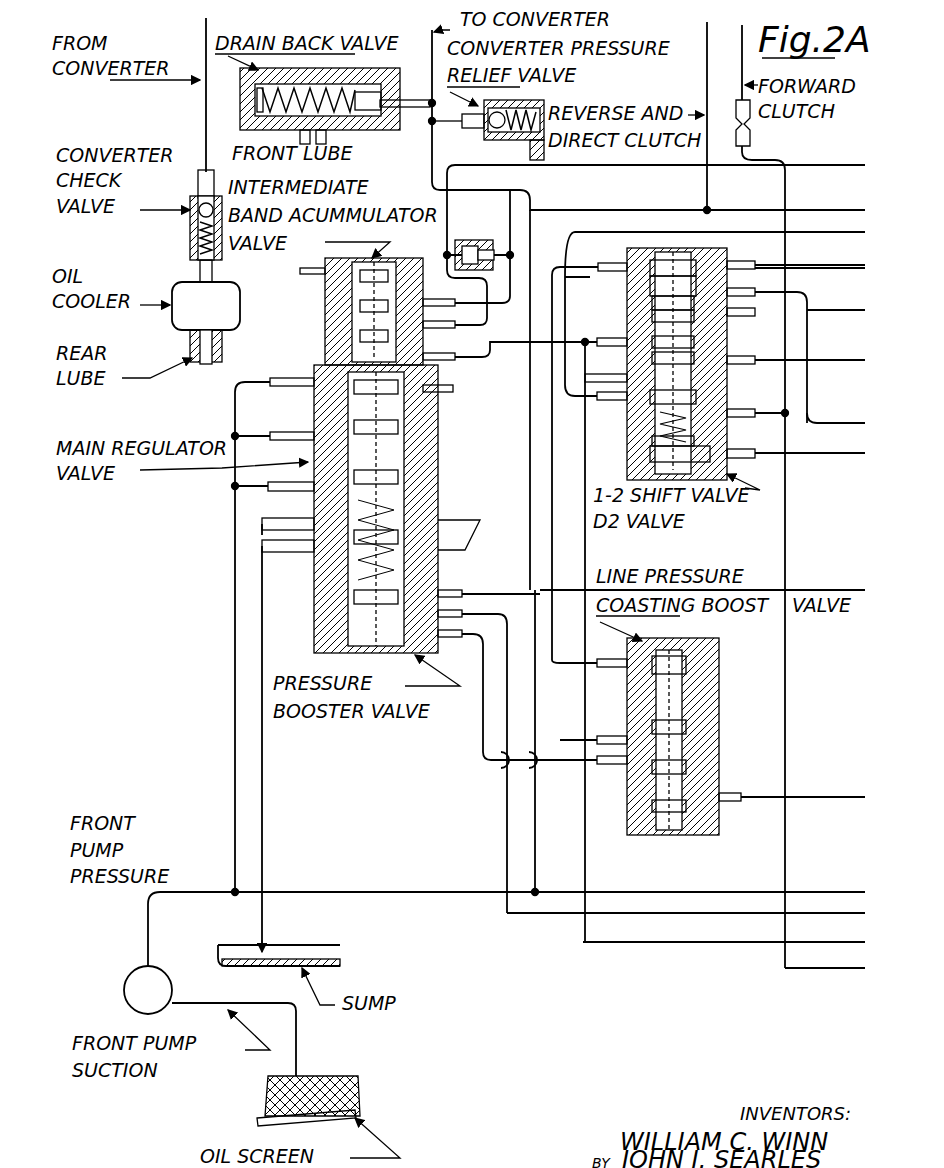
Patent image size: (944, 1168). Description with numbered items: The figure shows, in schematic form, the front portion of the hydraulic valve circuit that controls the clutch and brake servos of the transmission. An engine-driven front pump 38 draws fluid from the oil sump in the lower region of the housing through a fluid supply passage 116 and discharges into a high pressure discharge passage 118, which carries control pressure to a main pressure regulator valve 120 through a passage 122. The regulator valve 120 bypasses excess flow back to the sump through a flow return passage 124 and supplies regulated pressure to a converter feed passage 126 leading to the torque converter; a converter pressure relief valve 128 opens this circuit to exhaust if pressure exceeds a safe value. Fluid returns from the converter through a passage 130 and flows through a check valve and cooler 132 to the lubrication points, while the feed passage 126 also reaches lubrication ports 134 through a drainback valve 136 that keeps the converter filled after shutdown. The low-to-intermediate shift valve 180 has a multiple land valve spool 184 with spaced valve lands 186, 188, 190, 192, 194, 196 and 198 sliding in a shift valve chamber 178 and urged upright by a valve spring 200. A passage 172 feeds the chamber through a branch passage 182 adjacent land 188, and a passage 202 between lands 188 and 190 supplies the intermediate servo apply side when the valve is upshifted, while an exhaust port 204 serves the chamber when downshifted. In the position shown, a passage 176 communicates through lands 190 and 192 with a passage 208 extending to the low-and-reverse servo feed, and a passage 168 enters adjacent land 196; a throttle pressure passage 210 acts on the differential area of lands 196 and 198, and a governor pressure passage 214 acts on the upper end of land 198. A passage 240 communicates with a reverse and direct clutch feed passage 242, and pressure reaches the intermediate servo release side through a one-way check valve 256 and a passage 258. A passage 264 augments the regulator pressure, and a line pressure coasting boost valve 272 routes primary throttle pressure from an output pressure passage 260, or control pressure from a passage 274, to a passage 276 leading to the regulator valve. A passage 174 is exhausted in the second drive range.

The converter return passage 130 is at (206, 116).
The check valve and cooler 132 is at (172, 292).
The lubrication ports 134 is at (310, 146).
The drainback valve 136 is at (400, 118).
The converter feed passage 126 is at (432, 163).
The converter pressure relief valve 128 is at (484, 132).
The reverse and direct clutch feed passage 242 is at (707, 84).
The intermediate servo release passage 258 is at (568, 163).
The passage 240 is at (852, 210).
The passage 202 is at (854, 234).
The governor pressure passage 214 is at (854, 268).
The passage 168 is at (866, 308).
The one-way check valve 256 is at (488, 242).
The passage 176 is at (506, 352).
The main pressure regulator valve 120 is at (442, 486).
The passage 122 is at (235, 772).
The flow return passage 124 is at (262, 772).
The passage 276 is at (478, 750).
The passage 274 is at (562, 818).
The valve land 198 is at (650, 260).
The valve land 196 is at (652, 286).
The 1-2 shift valve chamber 178 is at (665, 296).
The valve land 192 is at (655, 322).
The exhaust port 204 is at (618, 366).
The valve land 188 is at (658, 412).
The valve land 186 is at (655, 440).
The valve spring 200 is at (660, 458).
The valve land 194 is at (720, 290).
The 1-2 shift valve 180 is at (695, 326).
The multiple land valve spool 184 is at (690, 354).
The valve land 190 is at (690, 380).
The branch passage 182 is at (740, 418).
The throttle pressure passage 210 is at (862, 420).
The passage 208 is at (822, 454).
The passage 264 is at (854, 596).
The line pressure coasting boost valve 272 is at (722, 754).
The output pressure passage 260 is at (856, 802).
The high pressure discharge passage 118 is at (206, 892).
The passage 174 is at (858, 922).
The passage 172 is at (812, 970).
The front pump 38 is at (123, 988).
The fluid supply passage 116 is at (185, 1000).